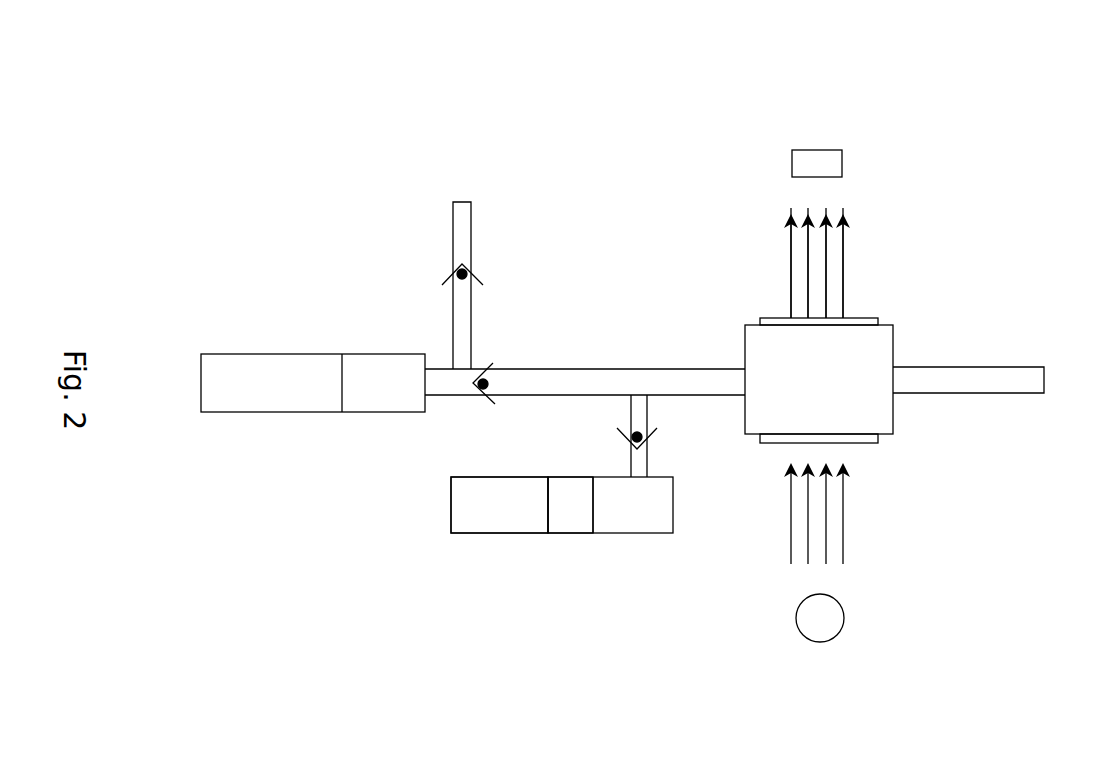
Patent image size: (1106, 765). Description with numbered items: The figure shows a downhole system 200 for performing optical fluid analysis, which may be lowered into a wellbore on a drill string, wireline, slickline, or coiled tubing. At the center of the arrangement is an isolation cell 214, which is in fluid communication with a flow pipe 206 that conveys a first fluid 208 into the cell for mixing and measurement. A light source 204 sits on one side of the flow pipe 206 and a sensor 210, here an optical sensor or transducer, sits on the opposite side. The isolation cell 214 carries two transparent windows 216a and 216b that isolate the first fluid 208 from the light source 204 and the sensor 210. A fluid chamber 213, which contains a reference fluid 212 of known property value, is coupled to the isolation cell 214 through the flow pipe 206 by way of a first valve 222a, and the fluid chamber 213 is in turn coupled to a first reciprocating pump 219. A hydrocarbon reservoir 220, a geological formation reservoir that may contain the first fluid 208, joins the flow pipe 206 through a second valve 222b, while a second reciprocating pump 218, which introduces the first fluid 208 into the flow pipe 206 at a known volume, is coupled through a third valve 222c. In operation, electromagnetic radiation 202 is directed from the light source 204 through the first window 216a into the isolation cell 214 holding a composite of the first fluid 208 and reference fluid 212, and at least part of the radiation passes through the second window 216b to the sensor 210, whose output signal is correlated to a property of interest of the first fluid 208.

The system for performing fluid analysis 200 is at (963, 82).
The electromagnetic radiation 202 is at (852, 257).
The light source 204 is at (844, 612).
The flow pipe 206 is at (603, 363).
The first fluid 208 is at (718, 375).
The sensor 210 is at (843, 162).
The reference fluid 212 is at (622, 523).
The fluid chamber 213 is at (499, 523).
The isolation cell 214 is at (893, 338).
The first transparent window 216a is at (878, 442).
The second transparent window 216b is at (878, 318).
The second reciprocating pump 218 is at (373, 417).
The first reciprocating pump 219 is at (566, 523).
The hydrocarbon reservoir 220 is at (468, 265).
The first valve 222a is at (642, 432).
The second valve 222b is at (465, 282).
The third valve 222c is at (487, 390).